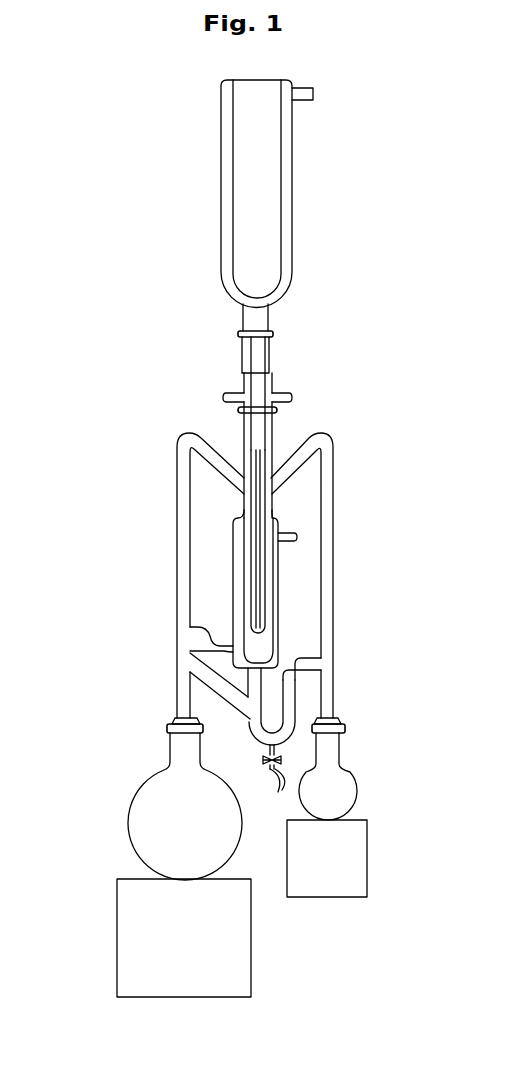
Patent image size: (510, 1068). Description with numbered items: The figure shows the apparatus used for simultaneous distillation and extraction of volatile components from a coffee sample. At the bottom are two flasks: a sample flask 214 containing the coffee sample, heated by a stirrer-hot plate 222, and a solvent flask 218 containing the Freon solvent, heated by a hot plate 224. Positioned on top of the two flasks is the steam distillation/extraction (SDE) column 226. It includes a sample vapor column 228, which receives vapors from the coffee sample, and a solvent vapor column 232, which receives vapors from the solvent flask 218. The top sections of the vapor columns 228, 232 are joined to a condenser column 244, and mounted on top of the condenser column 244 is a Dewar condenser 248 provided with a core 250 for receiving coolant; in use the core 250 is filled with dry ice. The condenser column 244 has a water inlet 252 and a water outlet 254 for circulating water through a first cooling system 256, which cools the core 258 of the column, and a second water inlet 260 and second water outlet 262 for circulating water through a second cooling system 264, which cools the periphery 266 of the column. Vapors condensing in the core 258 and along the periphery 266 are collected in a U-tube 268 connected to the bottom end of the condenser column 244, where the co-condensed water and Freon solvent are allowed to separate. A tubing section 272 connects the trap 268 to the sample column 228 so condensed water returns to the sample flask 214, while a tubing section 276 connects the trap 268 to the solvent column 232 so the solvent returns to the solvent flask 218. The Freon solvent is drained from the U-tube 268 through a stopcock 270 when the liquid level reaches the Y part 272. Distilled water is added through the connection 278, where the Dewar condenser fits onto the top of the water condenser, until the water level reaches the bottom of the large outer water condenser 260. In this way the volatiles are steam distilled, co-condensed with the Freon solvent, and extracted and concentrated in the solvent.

The sample flask 214 is at (143, 820).
The solvent flask 218 is at (340, 795).
The stirrer-hot plate 222 is at (117, 926).
The hot plate 224 is at (368, 848).
The steam distillation/extraction (SDE) column 226 is at (136, 501).
The sample vapor column 228 is at (177, 573).
The solvent vapor column 232 is at (335, 502).
The condenser column 244 is at (245, 453).
The Dewar condenser 248 is at (293, 198).
The core 250 is at (258, 90).
The water inlet 252 is at (292, 397).
The water outlet 254 is at (225, 397).
The first cooling system 256 is at (268, 462).
The core 258 is at (257, 388).
The second water inlet 260 is at (190, 627).
The second water outlet 262 is at (297, 533).
The second cooling system 264 is at (235, 538).
The periphery 266 is at (248, 557).
The U-tube 268 is at (258, 740).
The stopcock 270 is at (281, 780).
The tubing section 272 is at (207, 671).
The tubing section 276 is at (316, 656).
The connection 278 is at (260, 352).